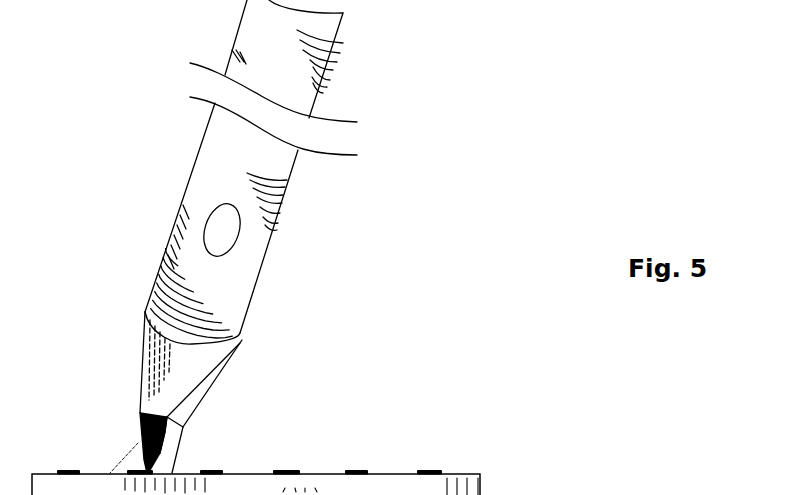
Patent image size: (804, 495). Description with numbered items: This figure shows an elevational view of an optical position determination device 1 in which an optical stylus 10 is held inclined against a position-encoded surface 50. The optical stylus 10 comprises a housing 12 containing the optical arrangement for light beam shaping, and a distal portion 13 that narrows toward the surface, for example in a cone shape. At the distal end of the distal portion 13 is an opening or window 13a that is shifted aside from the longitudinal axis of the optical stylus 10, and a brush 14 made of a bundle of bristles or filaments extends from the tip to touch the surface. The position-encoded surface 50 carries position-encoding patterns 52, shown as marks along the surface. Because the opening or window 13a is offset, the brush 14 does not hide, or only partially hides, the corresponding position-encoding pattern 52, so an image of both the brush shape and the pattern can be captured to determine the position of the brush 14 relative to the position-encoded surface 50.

The optical position determination device 1 is at (504, 136).
The optical stylus 10 is at (99, 183).
The housing 12 is at (195, 163).
The distal portion 13 is at (177, 352).
The opening or window 13a is at (178, 425).
The brush 14 is at (140, 443).
The position-encoded surface 50 is at (407, 391).
The position-encoding patterns 52 is at (425, 470).